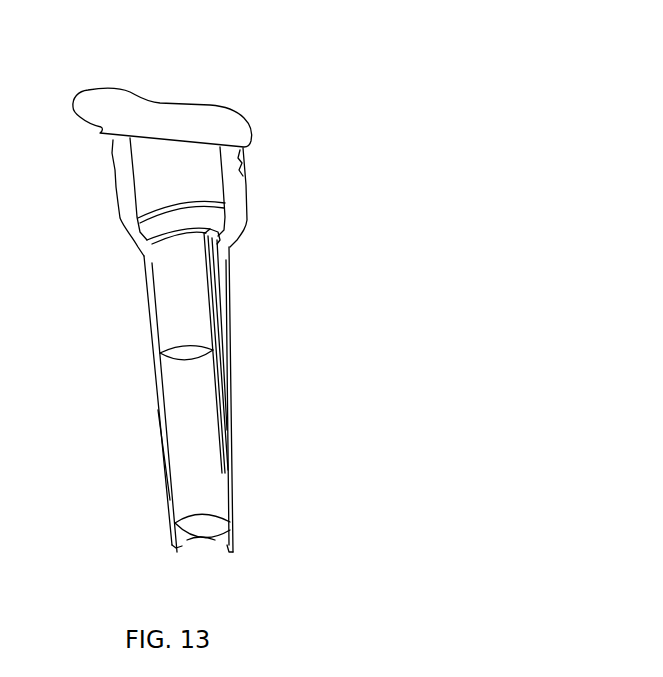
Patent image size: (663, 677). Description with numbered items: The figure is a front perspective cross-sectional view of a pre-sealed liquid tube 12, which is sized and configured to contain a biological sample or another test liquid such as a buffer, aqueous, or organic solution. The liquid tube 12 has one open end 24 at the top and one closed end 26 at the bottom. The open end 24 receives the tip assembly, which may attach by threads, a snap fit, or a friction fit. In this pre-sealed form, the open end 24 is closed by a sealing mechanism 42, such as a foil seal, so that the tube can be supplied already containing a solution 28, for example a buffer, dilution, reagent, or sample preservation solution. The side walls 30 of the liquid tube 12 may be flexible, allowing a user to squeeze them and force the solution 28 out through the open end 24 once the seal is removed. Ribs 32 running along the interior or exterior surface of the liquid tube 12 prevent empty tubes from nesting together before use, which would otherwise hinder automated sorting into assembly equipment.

The liquid tube 12 is at (192, 287).
The open end 24 is at (210, 153).
The closed end 26 is at (220, 547).
The solution 28 is at (202, 425).
The side walls 30 is at (172, 337).
The ribs 32 is at (230, 310).
The sealing mechanism 42 is at (157, 113).